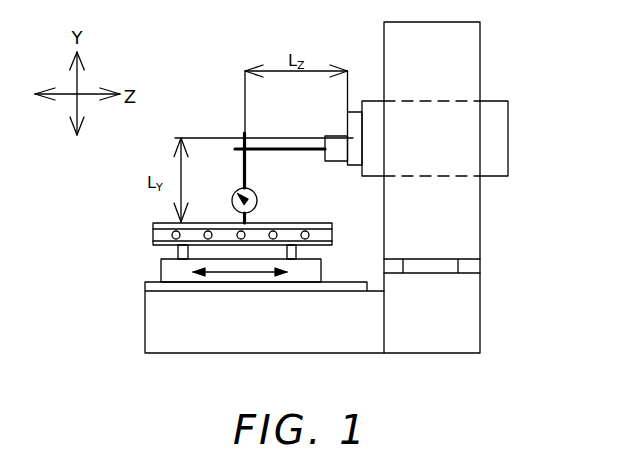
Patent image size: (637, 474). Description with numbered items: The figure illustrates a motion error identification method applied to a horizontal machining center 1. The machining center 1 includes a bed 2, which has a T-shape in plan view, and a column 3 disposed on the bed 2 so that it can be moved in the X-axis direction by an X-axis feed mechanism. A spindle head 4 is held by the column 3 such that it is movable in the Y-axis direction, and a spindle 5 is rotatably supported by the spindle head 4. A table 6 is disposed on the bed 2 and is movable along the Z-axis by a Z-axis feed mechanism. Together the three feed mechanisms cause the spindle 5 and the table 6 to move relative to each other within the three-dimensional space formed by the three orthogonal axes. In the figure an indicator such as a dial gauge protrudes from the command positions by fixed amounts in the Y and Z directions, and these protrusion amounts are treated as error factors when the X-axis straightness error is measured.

The horizontal machining center 1 is at (591, 132).
The bed 2 is at (477, 313).
The column 3 is at (477, 223).
The spindle head 4 is at (503, 100).
The spindle 5 is at (354, 112).
The table 6 is at (162, 272).